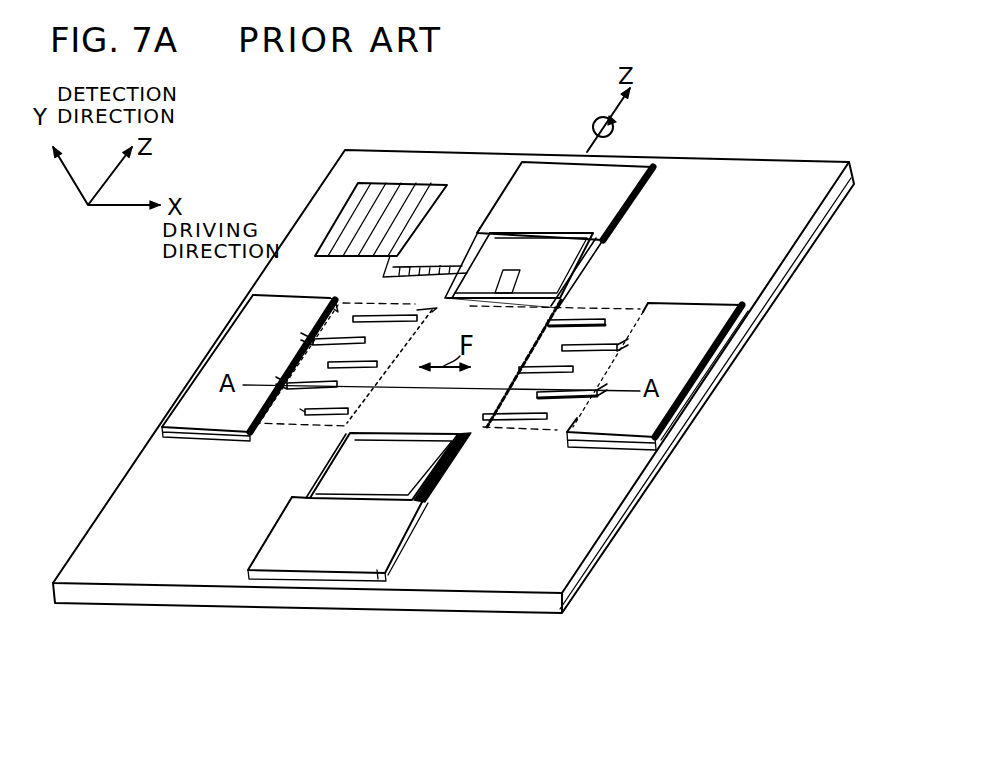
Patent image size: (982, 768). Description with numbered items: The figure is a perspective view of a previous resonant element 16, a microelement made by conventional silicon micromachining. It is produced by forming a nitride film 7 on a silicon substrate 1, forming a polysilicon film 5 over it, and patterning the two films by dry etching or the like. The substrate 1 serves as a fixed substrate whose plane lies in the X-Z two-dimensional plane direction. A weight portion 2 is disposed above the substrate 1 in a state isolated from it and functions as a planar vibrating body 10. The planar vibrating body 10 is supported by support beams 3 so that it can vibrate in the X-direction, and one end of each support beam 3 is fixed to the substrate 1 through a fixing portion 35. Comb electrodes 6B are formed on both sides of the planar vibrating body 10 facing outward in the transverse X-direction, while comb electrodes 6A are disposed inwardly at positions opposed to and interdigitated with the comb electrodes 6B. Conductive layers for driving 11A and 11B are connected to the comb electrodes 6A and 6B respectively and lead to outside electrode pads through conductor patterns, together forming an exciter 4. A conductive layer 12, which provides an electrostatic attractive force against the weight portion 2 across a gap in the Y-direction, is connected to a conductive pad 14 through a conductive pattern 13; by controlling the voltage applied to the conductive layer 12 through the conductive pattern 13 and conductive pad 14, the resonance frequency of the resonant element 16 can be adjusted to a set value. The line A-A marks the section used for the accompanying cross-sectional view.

The silicon substrate 1 is at (762, 178).
The weight portion 2 is at (506, 334).
The support beams 3 is at (468, 262).
The exciter 4 is at (356, 302).
The polysilicon film 5 is at (657, 170).
The comb electrodes 6A is at (330, 306).
The comb electrodes 6B is at (310, 428).
The nitride film 7 is at (640, 207).
The planar vibrating body 10 is at (407, 393).
The conductive layer for driving 11A is at (303, 345).
The conductive layer for driving 11B is at (416, 328).
The conductive layer 12 is at (392, 437).
The conductive pattern 13 is at (508, 280).
The conductive pad 14 is at (430, 208).
The resonant element 16 is at (759, 362).
The fixing portion 35 is at (623, 178).